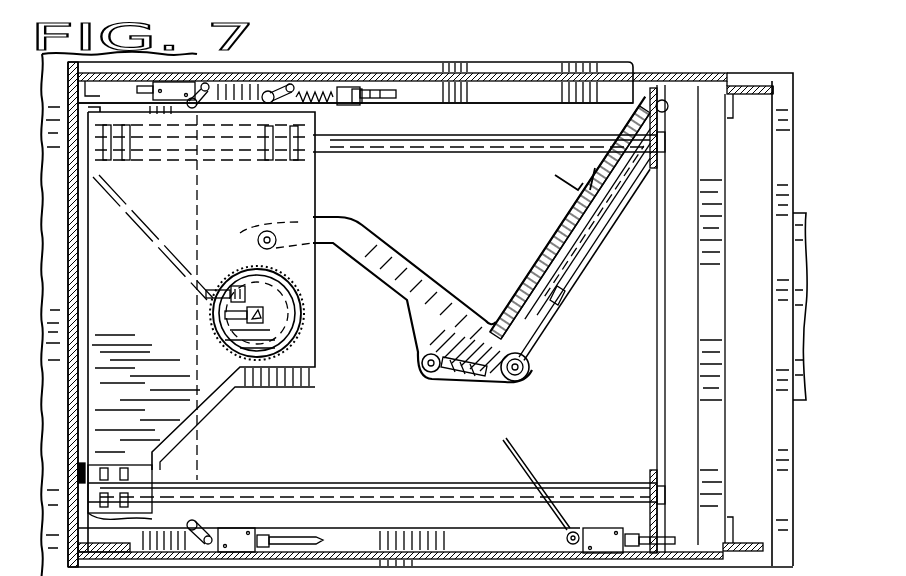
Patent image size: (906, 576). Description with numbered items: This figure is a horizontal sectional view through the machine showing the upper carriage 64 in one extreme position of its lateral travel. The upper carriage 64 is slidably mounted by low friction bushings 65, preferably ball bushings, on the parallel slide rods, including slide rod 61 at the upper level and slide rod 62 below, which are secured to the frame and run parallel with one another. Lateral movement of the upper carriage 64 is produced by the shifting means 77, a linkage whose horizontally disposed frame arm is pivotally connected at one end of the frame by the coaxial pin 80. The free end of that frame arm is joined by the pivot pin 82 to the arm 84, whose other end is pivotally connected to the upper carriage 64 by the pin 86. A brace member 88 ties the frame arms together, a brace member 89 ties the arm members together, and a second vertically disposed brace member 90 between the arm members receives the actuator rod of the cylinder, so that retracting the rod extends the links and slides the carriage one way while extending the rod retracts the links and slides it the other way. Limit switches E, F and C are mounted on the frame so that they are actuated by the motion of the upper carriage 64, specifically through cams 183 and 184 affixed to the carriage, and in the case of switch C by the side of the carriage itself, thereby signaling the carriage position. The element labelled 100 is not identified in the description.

The coaxial pin 80 is at (682, 97).
The slide rod 61 is at (508, 137).
The slide rod 62 is at (392, 482).
The upper carriage 64 is at (300, 353).
The low friction bushings 65 is at (272, 160).
The pin 86 is at (258, 243).
The arm 84 is at (358, 237).
The pivot pin 82 is at (422, 368).
The brace member 89 is at (470, 382).
The brace member 90 is at (532, 372).
The shifting means 77 is at (568, 229).
The brace member 88 is at (560, 178).
The limit switch E is at (190, 75).
The cam 183 is at (237, 112).
The limit switch F is at (327, 85).
The cam 184 is at (150, 521).
The limit switch C is at (605, 525).
The base 100 is at (652, 572).